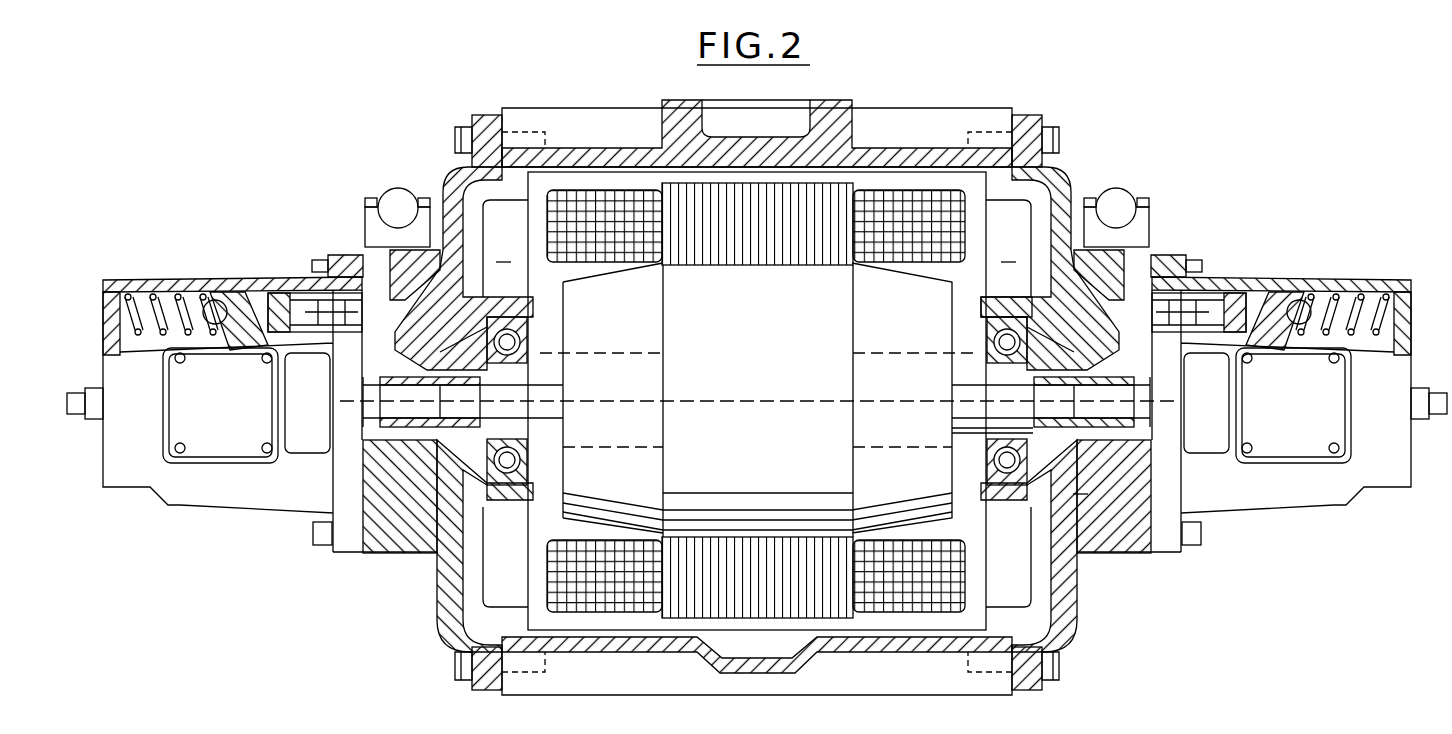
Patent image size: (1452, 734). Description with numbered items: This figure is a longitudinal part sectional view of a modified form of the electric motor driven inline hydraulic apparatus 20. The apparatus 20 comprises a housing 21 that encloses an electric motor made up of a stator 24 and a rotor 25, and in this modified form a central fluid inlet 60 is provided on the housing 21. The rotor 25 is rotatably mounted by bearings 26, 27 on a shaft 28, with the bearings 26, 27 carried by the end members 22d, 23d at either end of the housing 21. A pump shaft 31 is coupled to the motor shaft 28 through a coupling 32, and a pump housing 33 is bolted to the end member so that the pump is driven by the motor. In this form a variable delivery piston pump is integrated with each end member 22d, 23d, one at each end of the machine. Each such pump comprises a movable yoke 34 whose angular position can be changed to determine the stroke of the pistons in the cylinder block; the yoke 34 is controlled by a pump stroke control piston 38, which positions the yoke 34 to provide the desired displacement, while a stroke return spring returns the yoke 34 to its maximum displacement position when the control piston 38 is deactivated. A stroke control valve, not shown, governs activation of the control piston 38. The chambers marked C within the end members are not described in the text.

The electric motor driven inline hydraulic apparatus 20 is at (944, 82).
The housing 21 is at (605, 120).
The central fluid inlet 60 is at (777, 115).
The end member 22d is at (455, 180).
The end member 23d is at (1065, 177).
The stator 24 is at (774, 260).
The rotor 25 is at (737, 413).
The bearing 26 is at (509, 497).
The bearing 27 is at (996, 316).
The shaft 28 is at (969, 440).
The pump shaft 31 is at (363, 407).
The coupling 32 is at (478, 368).
The housing 33 is at (172, 288).
The movable yoke 34 is at (246, 295).
The pump stroke control piston 38 is at (314, 332).
The cavity C is at (791, 366).